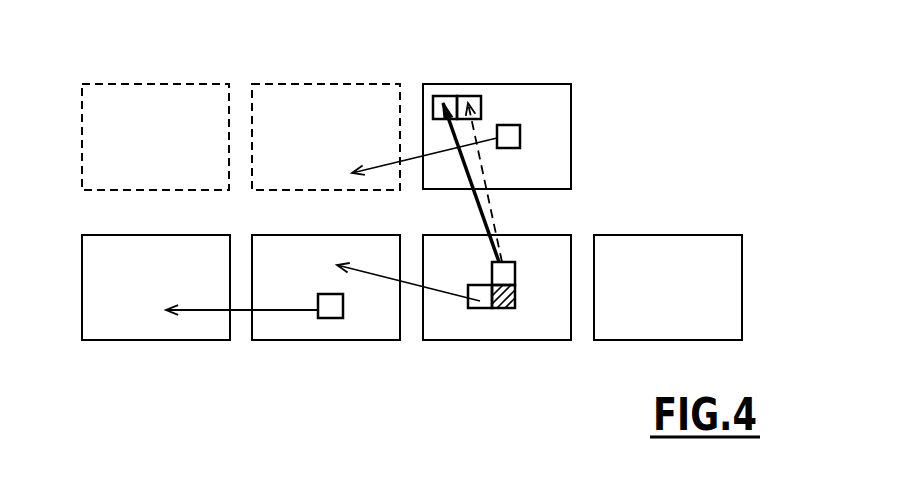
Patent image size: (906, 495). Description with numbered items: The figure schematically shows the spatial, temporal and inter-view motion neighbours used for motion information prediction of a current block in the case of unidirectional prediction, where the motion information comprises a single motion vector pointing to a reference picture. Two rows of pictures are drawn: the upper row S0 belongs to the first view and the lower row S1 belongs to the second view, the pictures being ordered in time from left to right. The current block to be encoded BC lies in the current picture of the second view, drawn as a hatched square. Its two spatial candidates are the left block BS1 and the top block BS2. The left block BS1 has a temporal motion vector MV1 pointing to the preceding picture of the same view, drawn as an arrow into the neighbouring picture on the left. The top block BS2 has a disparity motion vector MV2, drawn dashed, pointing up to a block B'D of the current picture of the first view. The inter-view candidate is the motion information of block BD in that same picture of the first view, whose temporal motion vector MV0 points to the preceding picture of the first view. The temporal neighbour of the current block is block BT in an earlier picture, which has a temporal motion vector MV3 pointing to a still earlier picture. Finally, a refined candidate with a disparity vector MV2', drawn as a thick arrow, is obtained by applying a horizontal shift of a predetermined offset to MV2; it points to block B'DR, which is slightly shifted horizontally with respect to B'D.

The first image sequence (dashed frames) S0 is at (60, 152).
The second image sequence S1 is at (63, 302).
The temporal motion vector MV0 is at (407, 157).
The temporal motion vector MV1 is at (410, 283).
The disparity motion vector MV2 is at (526, 182).
The refined disparity vector MV2' is at (435, 182).
The temporal motion vector MV3 is at (245, 312).
The shifted block B'DR is at (440, 65).
The block B'D is at (478, 62).
The inter-view candidate block BD is at (507, 125).
The temporal neighbour block BT is at (337, 313).
The first spatial candidate block BS1 is at (477, 308).
The second spatial candidate block BS2 is at (515, 273).
The current block BC is at (505, 308).